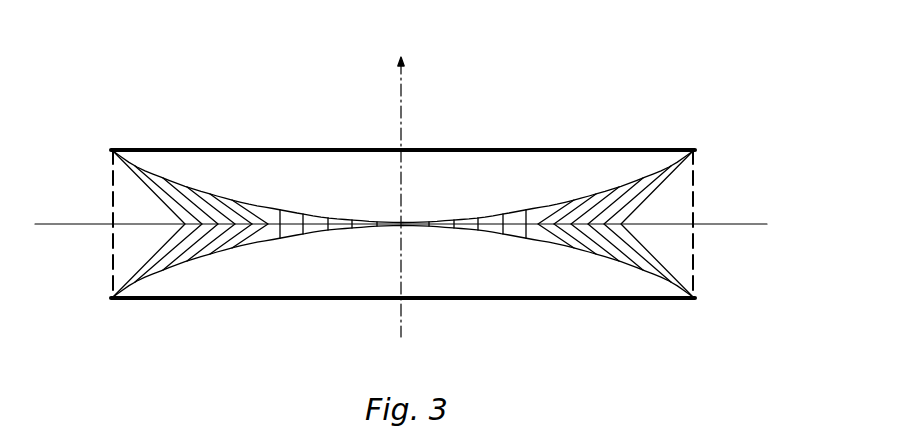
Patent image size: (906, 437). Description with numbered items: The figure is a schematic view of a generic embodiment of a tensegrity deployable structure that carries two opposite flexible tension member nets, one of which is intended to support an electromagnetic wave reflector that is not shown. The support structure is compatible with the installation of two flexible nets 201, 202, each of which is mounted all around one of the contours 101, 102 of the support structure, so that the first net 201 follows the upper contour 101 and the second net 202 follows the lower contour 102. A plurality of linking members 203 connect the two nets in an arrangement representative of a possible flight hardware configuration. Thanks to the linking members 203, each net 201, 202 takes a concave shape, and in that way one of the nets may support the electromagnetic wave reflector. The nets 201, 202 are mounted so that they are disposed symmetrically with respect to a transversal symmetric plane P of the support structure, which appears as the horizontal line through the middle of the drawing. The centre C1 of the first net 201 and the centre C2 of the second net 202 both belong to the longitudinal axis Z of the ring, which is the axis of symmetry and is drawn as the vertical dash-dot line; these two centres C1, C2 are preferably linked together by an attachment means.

The contour 101 is at (576, 147).
The contour 102 is at (547, 305).
The flexible net 201 is at (291, 200).
The flexible net 202 is at (526, 220).
The linking members 203 is at (249, 243).
The centre of net C1 is at (408, 214).
The centre of net C2 is at (406, 233).
The transversal symmetric plane P is at (716, 228).
The longitudinal axis Z is at (413, 190).